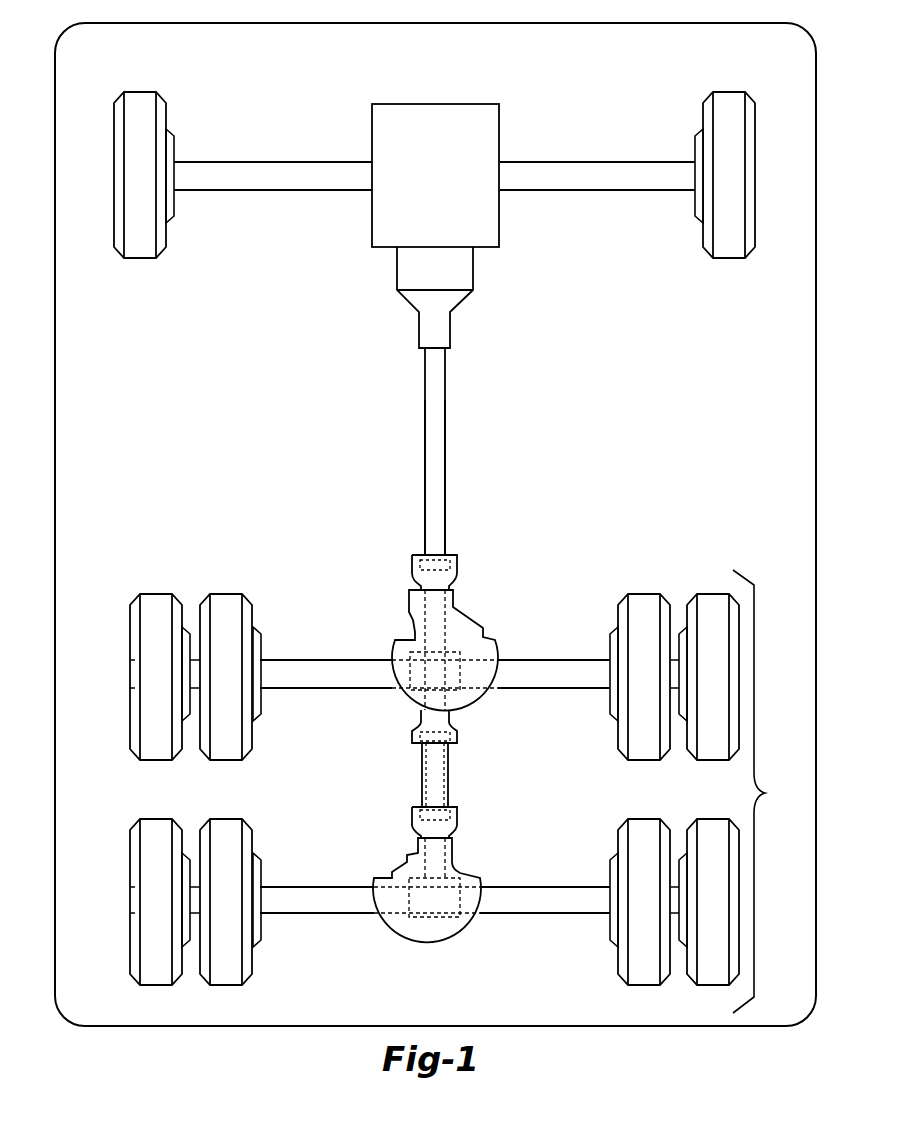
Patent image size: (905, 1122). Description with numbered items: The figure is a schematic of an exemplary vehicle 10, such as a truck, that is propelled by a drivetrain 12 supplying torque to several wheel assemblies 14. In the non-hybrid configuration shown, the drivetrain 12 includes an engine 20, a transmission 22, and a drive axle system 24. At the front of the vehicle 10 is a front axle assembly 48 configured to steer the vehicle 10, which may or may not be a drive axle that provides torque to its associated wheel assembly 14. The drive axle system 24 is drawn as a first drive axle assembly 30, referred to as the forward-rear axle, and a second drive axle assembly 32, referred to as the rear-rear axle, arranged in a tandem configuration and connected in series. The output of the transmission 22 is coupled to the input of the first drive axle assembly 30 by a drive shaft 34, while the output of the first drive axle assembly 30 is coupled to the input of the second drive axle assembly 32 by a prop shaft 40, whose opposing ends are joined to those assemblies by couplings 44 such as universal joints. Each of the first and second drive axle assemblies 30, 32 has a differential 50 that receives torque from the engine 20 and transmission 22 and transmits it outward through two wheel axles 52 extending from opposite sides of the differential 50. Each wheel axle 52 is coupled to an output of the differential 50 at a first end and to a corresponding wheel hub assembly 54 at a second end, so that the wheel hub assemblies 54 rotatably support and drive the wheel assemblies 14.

The vehicle 10 is at (632, 21).
The drivetrain 12 is at (414, 412).
The wheel assemblies 14 is at (120, 91).
The engine 20 is at (421, 189).
The transmission 22 is at (421, 283).
The drive axle system 24 is at (764, 791).
The first drive axle assembly 30 is at (120, 663).
The second drive axle assembly 32 is at (120, 912).
The drive shaft 34 is at (440, 495).
The prop shaft 40 is at (433, 771).
The couplings 44 is at (413, 736).
The front axle assembly 48 is at (112, 168).
The differential 50 is at (448, 678).
The wheel axle 52 is at (323, 690).
The wheel hub assembly 54 is at (195, 660).